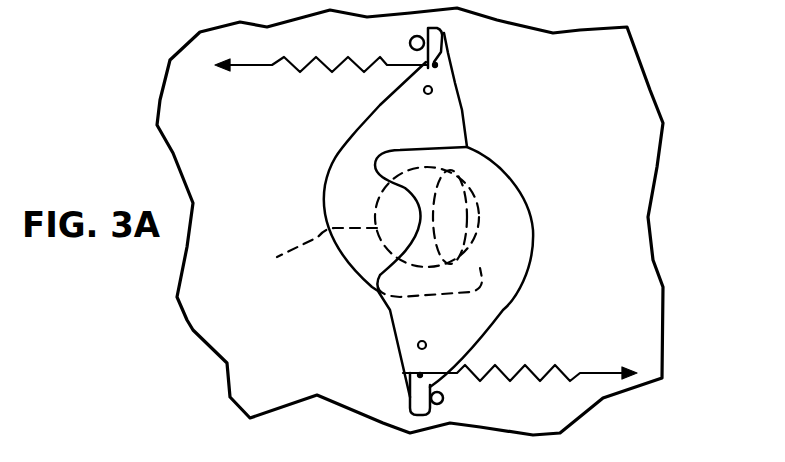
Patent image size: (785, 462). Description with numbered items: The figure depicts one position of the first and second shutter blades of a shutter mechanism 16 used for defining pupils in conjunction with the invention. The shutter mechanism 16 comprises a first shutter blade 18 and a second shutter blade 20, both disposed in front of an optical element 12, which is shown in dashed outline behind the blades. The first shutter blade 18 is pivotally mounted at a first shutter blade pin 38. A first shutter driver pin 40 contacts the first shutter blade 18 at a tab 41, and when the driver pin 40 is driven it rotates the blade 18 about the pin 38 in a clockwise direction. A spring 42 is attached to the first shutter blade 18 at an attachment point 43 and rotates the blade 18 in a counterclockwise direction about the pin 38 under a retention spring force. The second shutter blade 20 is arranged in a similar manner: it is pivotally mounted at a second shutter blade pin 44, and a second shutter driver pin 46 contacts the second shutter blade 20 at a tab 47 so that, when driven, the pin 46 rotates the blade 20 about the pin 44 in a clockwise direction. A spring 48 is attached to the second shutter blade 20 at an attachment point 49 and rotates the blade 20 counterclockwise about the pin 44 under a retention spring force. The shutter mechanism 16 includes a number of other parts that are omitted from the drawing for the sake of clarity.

The optical element 12 is at (365, 232).
The shutter mechanism 16 is at (545, 150).
The first shutter blade 18 is at (330, 173).
The second shutter blade 20 is at (524, 233).
The first shutter blade pin 38 is at (432, 88).
The first shutter driver pin 40 is at (410, 43).
The tab 41 is at (447, 34).
The spring 42 is at (332, 66).
The spring attachment point 43 is at (436, 65).
The second shutter blade pin 44 is at (420, 342).
The second shutter driver pin 46 is at (444, 400).
The tab 47 is at (408, 400).
The spring 48 is at (510, 368).
The spring attachment point 49 is at (420, 375).